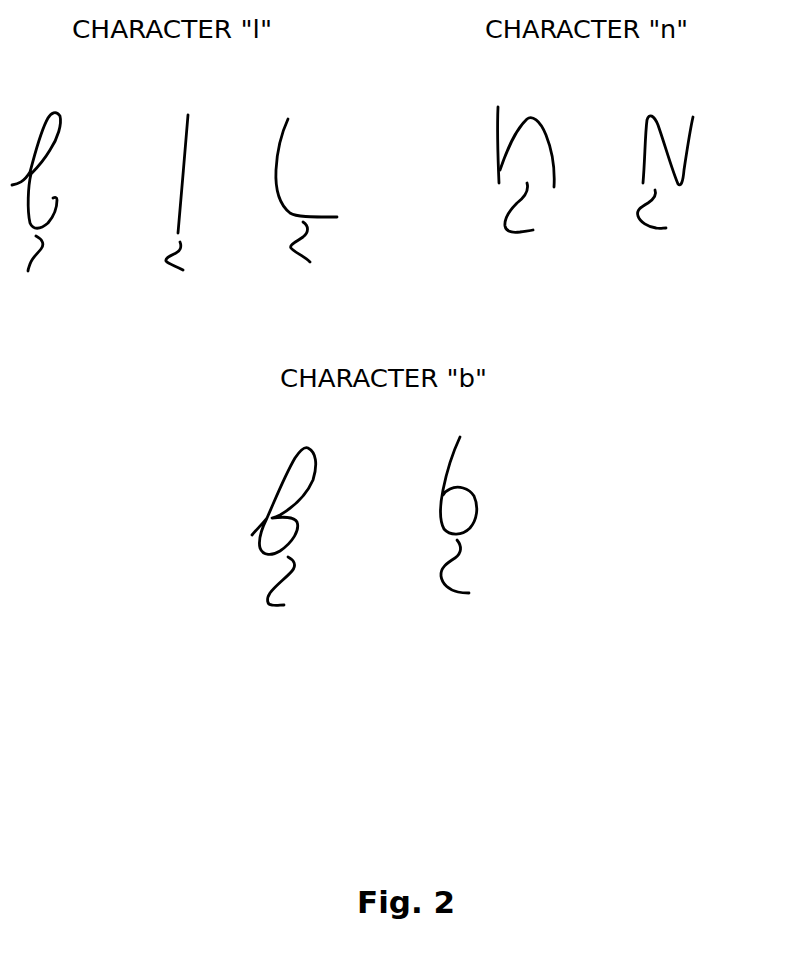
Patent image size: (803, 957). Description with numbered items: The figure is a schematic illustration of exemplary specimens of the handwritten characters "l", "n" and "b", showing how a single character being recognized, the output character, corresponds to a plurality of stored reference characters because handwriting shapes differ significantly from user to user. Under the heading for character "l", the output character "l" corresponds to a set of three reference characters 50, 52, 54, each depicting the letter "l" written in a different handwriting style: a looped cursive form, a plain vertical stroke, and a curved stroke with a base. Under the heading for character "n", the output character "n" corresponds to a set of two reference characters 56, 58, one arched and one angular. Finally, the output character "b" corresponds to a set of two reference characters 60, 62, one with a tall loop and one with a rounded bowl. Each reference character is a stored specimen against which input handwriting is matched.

The reference character 50 is at (36, 210).
The reference character 52 is at (177, 210).
The reference character 54 is at (306, 209).
The reference character 56 is at (526, 186).
The reference character 58 is at (665, 190).
The reference character 60 is at (284, 544).
The reference character 62 is at (459, 532).